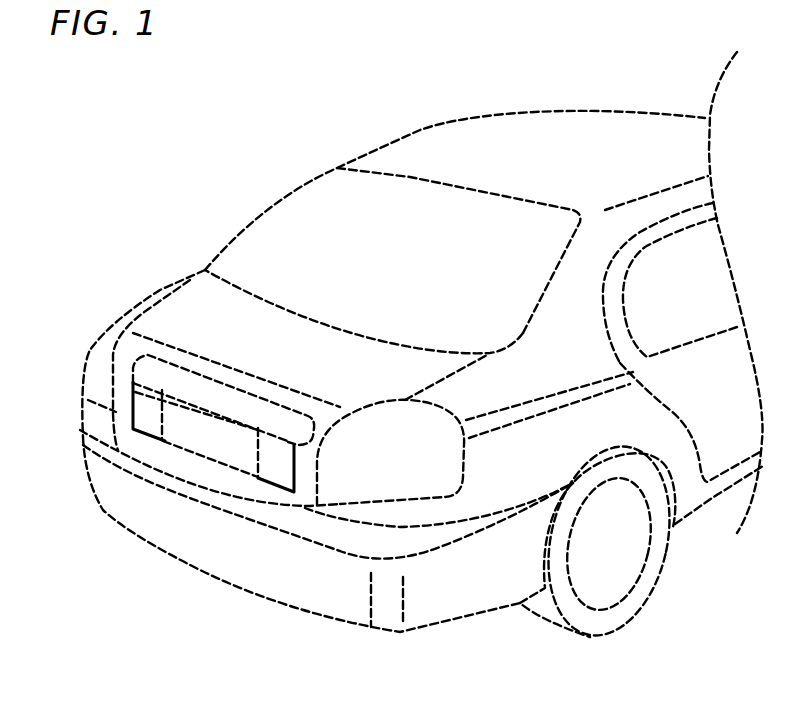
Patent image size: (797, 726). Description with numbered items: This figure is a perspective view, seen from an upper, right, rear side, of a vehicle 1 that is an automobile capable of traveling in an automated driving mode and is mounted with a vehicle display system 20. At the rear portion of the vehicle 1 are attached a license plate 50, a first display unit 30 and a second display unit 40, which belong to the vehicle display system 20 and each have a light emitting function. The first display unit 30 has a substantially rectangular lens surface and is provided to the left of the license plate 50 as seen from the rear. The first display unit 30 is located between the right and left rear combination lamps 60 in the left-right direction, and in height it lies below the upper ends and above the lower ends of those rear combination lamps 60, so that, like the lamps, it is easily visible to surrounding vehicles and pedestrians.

The vehicle 1 is at (265, 144).
The vehicle display system 20 is at (72, 489).
The first display unit 30 is at (143, 422).
The second display unit 40 is at (277, 475).
The license plate 50 is at (198, 442).
The rear combination lamp 60 is at (88, 360).